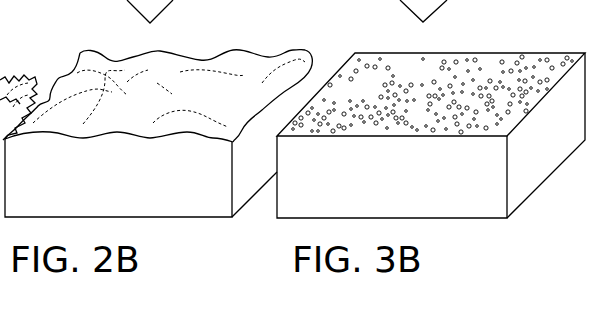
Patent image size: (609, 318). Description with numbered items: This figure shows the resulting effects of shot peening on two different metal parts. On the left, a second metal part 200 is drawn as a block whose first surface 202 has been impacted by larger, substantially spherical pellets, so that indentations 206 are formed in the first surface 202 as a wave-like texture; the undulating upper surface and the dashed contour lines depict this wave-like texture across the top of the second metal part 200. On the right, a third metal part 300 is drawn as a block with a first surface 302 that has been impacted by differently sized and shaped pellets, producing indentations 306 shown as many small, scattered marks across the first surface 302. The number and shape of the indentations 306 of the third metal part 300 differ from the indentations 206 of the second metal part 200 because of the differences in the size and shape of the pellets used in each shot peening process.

In FIG. 2B, the second metal part 200 is at (206, 49).
In FIG. 2B, the first surface 202 is at (88, 51).
In FIG. 2B, the indentations 206 is at (221, 89).
In FIG. 3B, the third metal part 300 is at (449, 41).
In FIG. 3B, the first surface 302 is at (420, 52).
In FIG. 3B, the indentations 306 is at (481, 89).